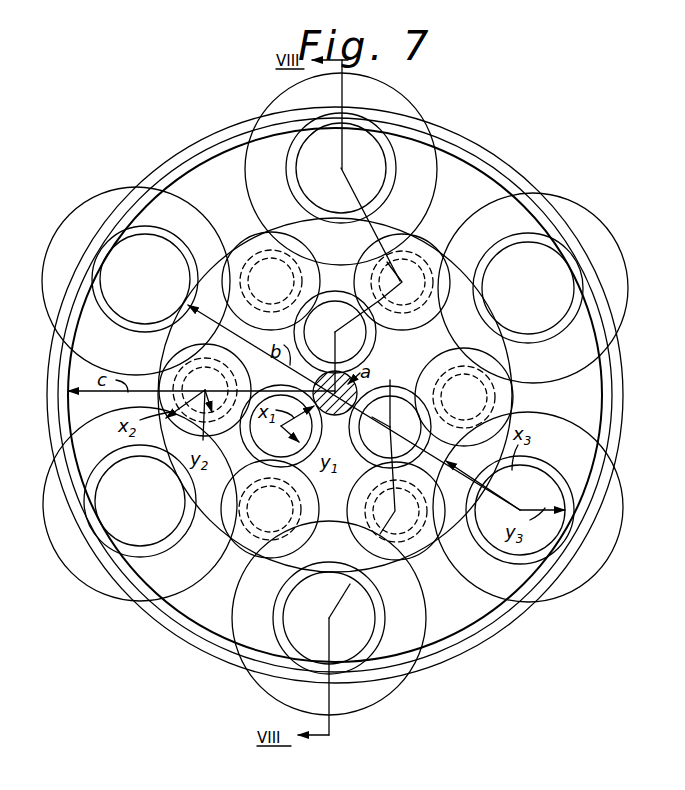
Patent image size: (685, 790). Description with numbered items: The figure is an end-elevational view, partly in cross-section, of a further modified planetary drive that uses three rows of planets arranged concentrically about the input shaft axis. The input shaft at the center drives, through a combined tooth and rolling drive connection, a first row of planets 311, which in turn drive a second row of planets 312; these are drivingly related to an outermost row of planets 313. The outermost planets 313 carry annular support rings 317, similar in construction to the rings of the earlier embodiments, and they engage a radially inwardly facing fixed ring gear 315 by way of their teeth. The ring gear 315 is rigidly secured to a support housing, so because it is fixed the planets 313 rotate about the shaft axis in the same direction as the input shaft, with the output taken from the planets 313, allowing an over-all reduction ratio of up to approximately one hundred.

The first row of planets 311 is at (356, 334).
The second row of planets 312 is at (244, 232).
The outermost row of planets 313 is at (556, 302).
The fixed ring gear 315 is at (602, 407).
The annular support rings 317 is at (488, 156).